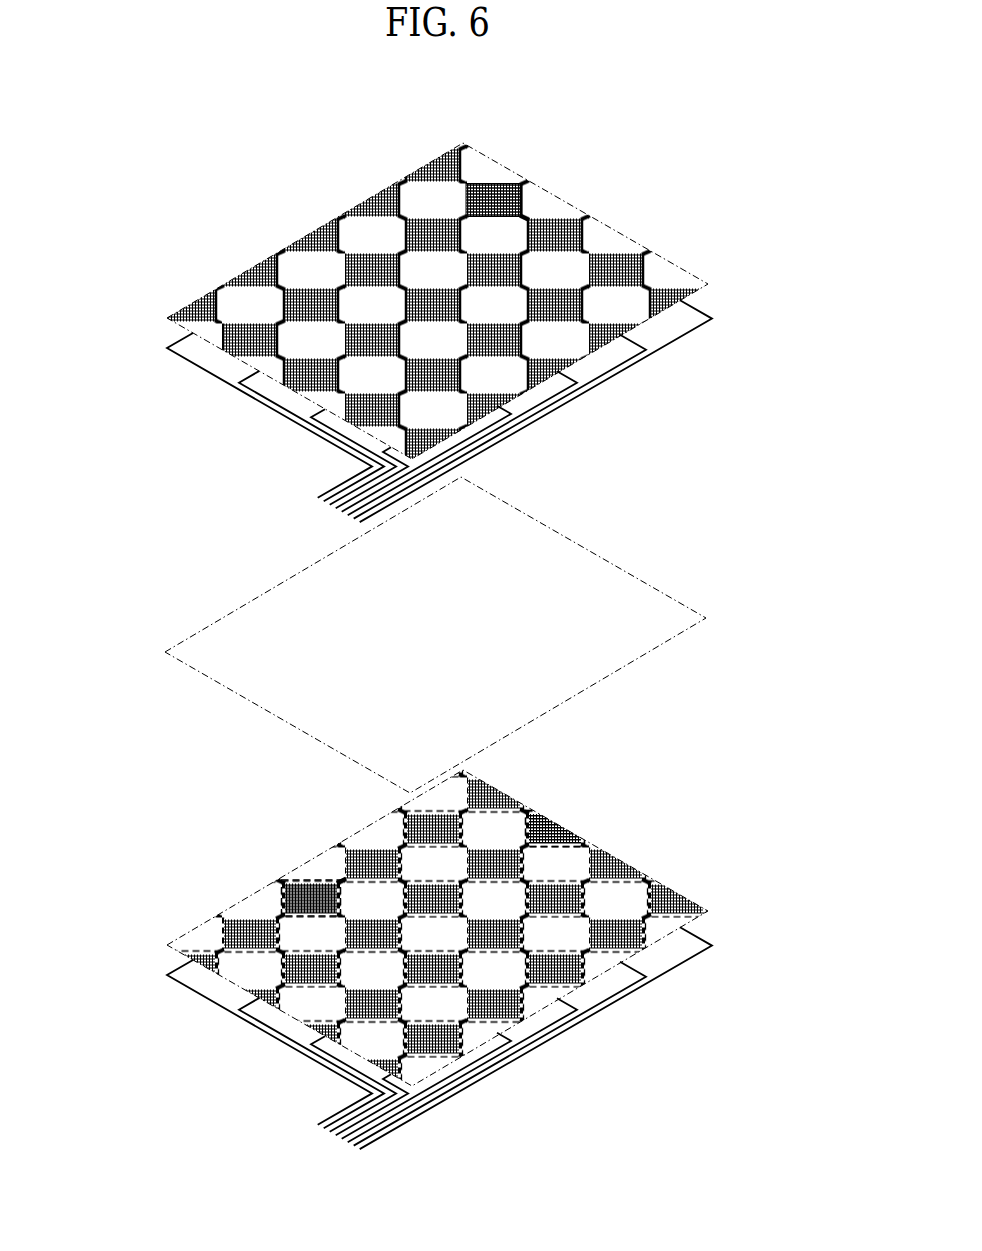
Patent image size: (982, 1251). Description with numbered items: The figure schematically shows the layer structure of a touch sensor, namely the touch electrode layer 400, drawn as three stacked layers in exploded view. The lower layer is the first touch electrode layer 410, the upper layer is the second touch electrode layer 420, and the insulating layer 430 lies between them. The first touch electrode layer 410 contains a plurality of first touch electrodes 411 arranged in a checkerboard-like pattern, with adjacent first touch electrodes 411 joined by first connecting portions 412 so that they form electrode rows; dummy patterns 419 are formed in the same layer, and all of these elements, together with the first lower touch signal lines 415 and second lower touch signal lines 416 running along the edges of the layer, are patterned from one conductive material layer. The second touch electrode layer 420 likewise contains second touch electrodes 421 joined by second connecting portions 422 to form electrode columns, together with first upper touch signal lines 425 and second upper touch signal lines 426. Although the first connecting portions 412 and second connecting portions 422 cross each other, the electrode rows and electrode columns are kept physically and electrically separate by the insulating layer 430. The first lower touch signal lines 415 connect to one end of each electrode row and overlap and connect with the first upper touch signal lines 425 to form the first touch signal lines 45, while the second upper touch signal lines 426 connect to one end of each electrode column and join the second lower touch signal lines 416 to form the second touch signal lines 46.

The touch electrode layer 400 is at (776, 230).
The first touch electrode layer 410 is at (127, 925).
The first touch electrode 411 is at (282, 882).
The first connecting portion 412 is at (342, 880).
The first lower touch signal line 415 is at (197, 997).
The second lower touch signal line 416 is at (677, 975).
The dummy pattern 419 is at (535, 813).
The second touch electrode layer 420 is at (123, 302).
The second touch electrode 421 is at (490, 183).
The second connecting portion 422 is at (527, 217).
The first upper touch signal line 425 is at (197, 366).
The second upper touch signal line 426 is at (712, 320).
The insulating layer 430 is at (142, 634).
The first touch signal line 45 is at (776, 480).
The second touch signal line 46 is at (776, 600).